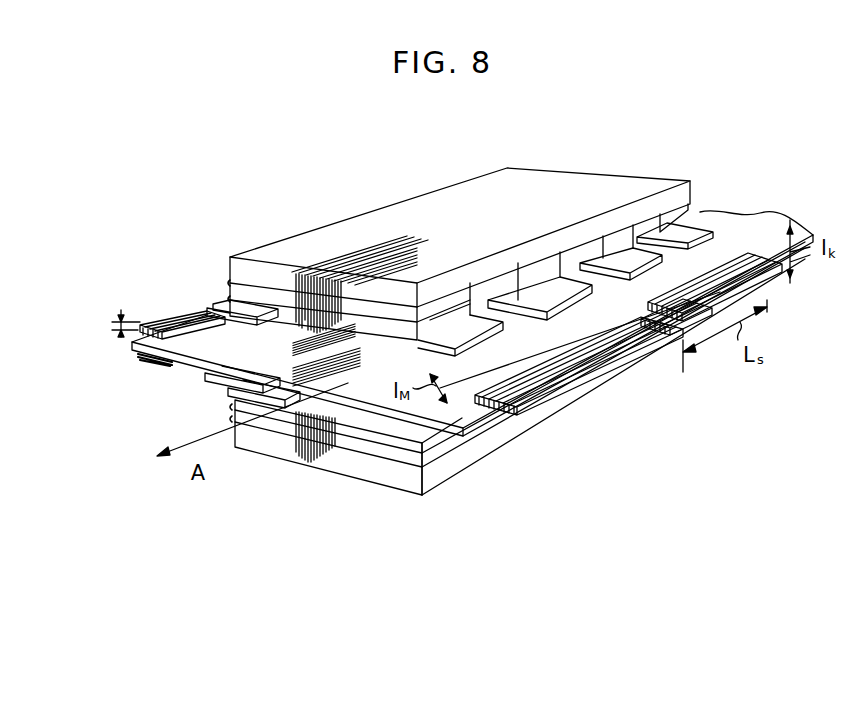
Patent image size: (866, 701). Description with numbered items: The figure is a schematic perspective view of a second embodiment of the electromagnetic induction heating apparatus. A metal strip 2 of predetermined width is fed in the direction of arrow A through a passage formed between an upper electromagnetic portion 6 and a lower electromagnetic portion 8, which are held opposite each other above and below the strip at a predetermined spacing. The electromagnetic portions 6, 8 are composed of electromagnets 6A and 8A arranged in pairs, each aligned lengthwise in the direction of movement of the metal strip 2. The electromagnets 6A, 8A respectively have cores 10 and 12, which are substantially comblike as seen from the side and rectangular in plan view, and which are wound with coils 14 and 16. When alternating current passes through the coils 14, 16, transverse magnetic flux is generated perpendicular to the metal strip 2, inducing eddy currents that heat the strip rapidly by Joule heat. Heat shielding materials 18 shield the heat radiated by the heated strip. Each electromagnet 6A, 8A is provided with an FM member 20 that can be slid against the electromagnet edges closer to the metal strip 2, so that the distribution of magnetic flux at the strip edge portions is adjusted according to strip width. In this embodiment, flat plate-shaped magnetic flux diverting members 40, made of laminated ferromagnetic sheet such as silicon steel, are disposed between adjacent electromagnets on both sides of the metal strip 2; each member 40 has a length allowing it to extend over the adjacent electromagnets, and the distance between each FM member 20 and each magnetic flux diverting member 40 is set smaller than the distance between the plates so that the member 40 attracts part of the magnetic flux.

The metal strip 2 is at (197, 352).
The electromagnetic portion 6 is at (362, 201).
The electromagnet 6A is at (452, 298).
The electromagnetic portion 8 is at (372, 484).
The electromagnet 8A is at (449, 466).
The core 10 is at (517, 172).
The core 12 is at (402, 480).
The coil 14 is at (675, 202).
The coil 16 is at (362, 458).
The heat shielding material 18 is at (203, 318).
The FM member 20 is at (557, 292).
The magnetic flux diverting member 40 is at (735, 262).